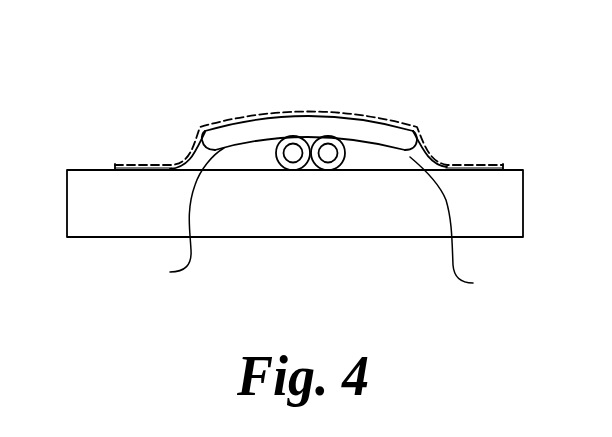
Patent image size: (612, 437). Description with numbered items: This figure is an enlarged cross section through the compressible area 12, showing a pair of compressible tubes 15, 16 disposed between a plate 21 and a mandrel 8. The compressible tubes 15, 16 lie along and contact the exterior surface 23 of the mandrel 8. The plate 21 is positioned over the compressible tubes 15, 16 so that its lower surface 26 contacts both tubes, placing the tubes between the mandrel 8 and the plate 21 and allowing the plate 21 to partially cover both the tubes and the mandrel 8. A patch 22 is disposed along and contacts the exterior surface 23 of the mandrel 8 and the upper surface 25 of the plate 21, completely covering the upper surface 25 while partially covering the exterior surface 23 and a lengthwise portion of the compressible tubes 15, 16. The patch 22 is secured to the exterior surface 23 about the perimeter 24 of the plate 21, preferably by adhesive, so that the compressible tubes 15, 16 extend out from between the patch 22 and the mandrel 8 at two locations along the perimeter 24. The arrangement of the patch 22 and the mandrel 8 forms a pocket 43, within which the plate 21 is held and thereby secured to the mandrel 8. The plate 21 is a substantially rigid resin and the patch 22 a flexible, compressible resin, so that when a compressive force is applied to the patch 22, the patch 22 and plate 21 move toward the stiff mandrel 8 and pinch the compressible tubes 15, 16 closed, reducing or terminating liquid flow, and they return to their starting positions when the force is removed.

The mandrel 8 is at (406, 213).
The compressible area 12 is at (195, 95).
The compressible tube 15 is at (293, 169).
The compressible tube 16 is at (329, 169).
The plate 21 is at (387, 133).
The patch 22 is at (277, 114).
The exterior surface 23 is at (95, 170).
The perimeter 24 is at (486, 165).
The upper surface 25 is at (333, 117).
The lower surface 26 is at (175, 218).
The pocket 43 is at (462, 229).